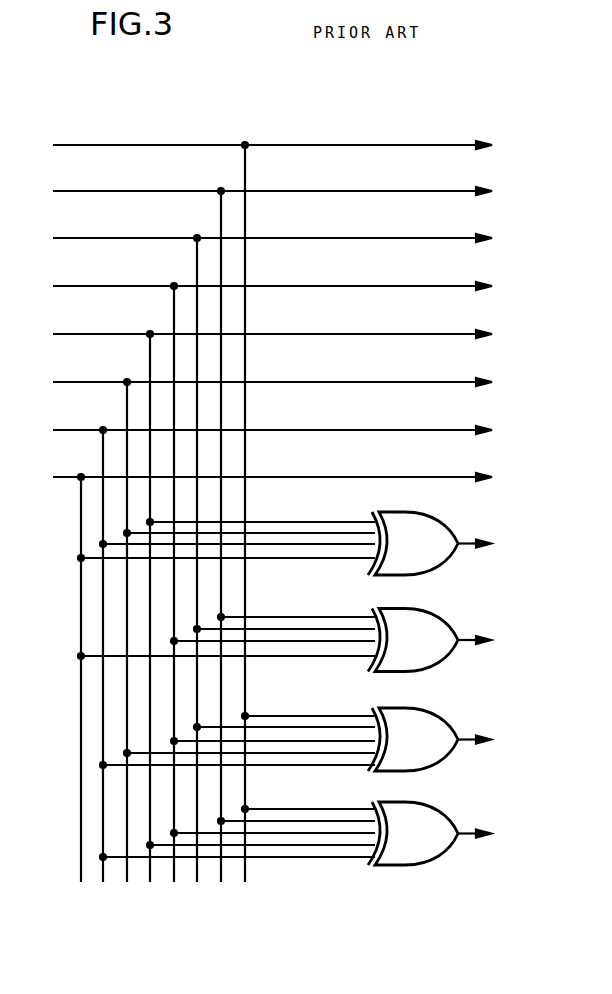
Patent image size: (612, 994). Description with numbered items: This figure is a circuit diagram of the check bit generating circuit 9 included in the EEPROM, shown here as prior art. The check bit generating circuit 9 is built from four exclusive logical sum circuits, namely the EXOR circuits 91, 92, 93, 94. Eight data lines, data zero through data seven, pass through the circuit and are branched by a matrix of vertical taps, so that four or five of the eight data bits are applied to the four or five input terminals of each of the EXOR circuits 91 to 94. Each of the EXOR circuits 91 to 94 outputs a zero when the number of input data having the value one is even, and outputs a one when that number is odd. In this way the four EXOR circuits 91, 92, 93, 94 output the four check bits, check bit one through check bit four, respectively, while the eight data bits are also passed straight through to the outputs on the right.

The check bit generating circuit 9 is at (480, 900).
The exclusive logical sum circuit 91 is at (444, 515).
The exclusive logical sum circuit 92 is at (444, 612).
The exclusive logical sum circuit 93 is at (444, 711).
The exclusive logical sum circuit 94 is at (444, 805).